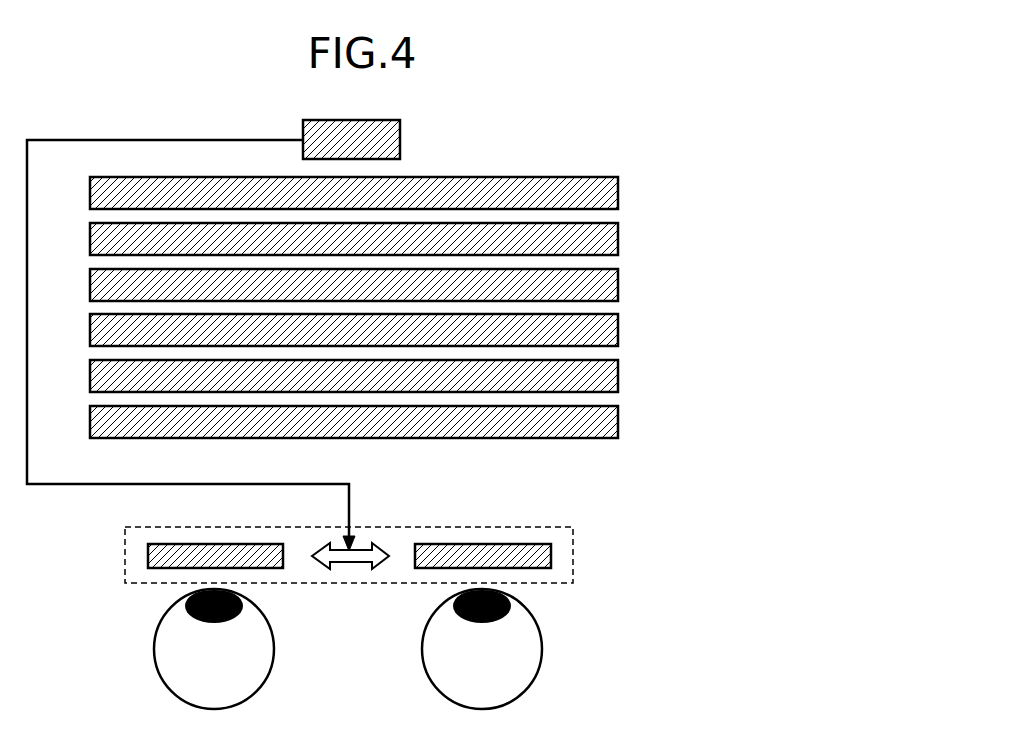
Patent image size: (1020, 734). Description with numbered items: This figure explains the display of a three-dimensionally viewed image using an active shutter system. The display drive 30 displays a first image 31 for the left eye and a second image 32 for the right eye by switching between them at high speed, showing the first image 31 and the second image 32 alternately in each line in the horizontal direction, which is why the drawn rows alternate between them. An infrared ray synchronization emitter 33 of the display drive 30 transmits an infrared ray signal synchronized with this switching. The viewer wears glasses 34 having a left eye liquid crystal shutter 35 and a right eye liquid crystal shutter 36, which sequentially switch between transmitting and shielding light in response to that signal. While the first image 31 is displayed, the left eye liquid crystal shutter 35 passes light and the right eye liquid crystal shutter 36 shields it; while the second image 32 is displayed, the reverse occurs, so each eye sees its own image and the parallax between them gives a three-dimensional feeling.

The display drive 30 is at (617, 142).
The first image 31 is at (618, 190).
The second image 32 is at (618, 236).
The infrared ray synchronization emitter 33 is at (400, 138).
The glasses 34 is at (573, 553).
The left eye liquid crystal shutter 35 is at (150, 558).
The right eye liquid crystal shutter 36 is at (485, 544).